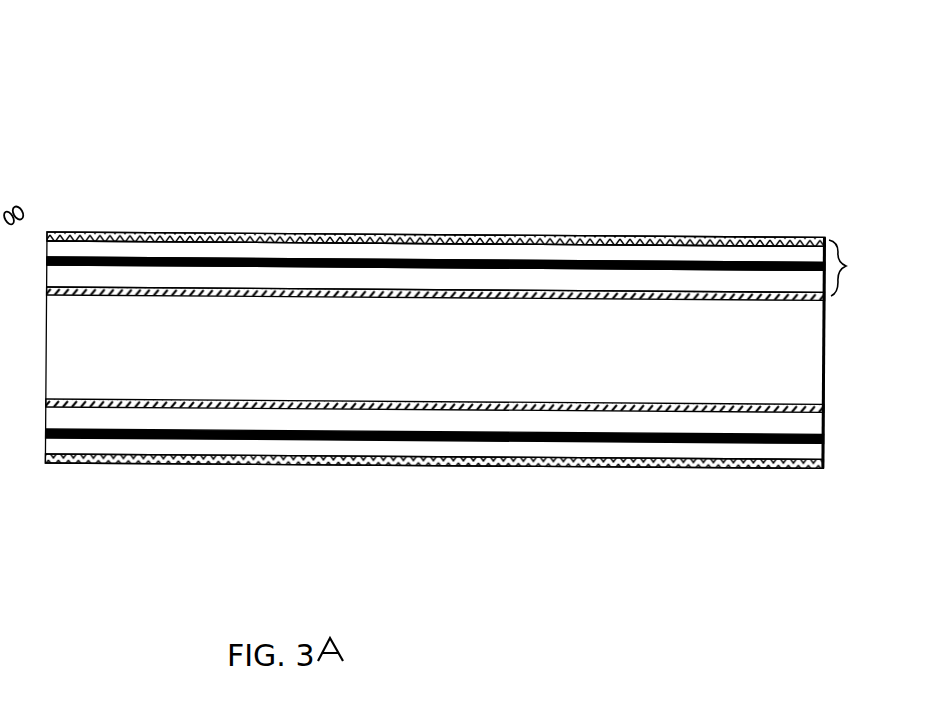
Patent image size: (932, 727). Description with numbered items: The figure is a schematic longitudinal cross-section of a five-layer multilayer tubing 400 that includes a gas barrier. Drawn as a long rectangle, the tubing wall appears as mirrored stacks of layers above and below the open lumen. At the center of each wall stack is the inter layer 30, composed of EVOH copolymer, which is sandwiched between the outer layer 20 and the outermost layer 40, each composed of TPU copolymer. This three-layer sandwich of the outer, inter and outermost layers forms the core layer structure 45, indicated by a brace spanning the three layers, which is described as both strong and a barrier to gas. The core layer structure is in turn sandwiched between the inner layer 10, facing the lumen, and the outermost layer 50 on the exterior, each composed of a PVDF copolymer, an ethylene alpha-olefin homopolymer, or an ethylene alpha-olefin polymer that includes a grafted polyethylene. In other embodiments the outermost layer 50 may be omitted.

The inner layer 10 is at (72, 287).
The outer layer 20 is at (247, 273).
The inter layer 30 is at (398, 260).
The outermost layer 40 is at (557, 250).
The outermost layer 50 is at (747, 242).
The core layer structure 45 is at (923, 252).
The multilayer tubing 400 is at (529, 56).